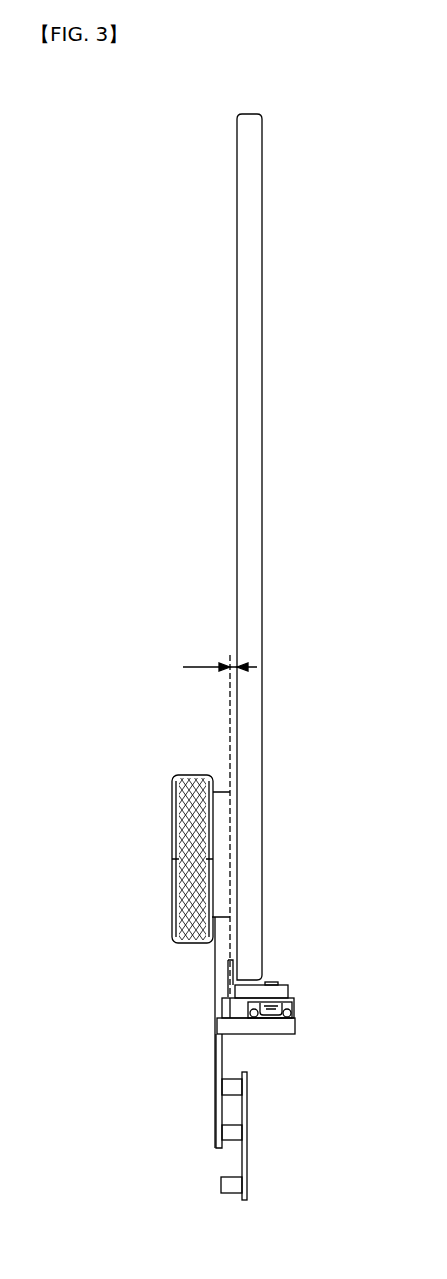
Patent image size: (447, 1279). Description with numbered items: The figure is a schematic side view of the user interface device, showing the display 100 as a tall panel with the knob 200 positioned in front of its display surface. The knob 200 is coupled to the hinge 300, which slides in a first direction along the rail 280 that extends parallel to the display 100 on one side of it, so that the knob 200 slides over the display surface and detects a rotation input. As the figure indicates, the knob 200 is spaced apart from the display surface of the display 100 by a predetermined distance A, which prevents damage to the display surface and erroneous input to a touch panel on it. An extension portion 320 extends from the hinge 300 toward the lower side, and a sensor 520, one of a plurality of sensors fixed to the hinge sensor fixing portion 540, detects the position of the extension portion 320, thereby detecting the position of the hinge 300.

The display 100 is at (255, 282).
The knob 200 is at (153, 795).
The hinge 300 is at (214, 975).
The rail 280 is at (290, 1003).
The extension portion 320 is at (216, 1058).
The sensor 520 is at (247, 1130).
The hinge sensor fixing portion 540 is at (222, 1184).
The predetermined distance A is at (220, 821).